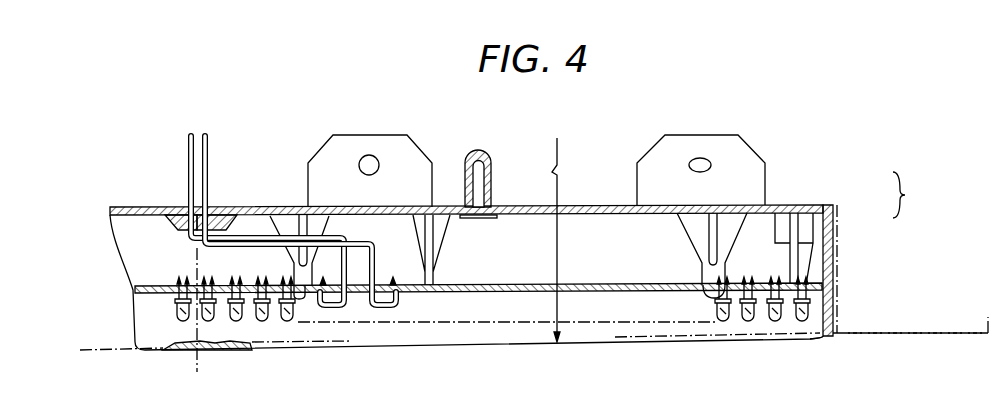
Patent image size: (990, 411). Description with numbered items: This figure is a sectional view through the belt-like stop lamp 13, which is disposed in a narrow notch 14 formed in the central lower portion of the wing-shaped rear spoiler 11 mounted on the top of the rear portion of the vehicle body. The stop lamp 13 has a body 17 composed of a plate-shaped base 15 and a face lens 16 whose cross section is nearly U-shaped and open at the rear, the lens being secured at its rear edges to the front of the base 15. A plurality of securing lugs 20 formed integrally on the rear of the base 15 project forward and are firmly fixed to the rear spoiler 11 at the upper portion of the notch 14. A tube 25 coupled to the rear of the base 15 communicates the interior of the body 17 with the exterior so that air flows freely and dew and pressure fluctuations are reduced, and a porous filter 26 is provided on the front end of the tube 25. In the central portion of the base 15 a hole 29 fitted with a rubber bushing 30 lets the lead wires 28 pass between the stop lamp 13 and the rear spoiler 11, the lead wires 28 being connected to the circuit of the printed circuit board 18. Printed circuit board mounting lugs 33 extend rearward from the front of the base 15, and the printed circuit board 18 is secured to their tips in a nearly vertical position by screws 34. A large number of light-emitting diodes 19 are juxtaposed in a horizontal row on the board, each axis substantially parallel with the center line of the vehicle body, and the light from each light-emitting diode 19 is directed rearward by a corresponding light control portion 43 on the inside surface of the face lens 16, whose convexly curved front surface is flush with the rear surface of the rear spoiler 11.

The rear spoiler 11 is at (933, 338).
The stop lamp 13 is at (512, 383).
The notch 14 is at (825, 338).
The base 15 is at (830, 199).
The face lens 16 is at (838, 217).
The body 17 is at (913, 195).
The printed circuit board 18 is at (165, 294).
The light-emitting diodes 19 is at (287, 323).
The securing lugs 20 is at (370, 135).
The tube 25 is at (492, 168).
The filter 26 is at (477, 218).
The lead wires 28 is at (207, 158).
The hole 29 is at (175, 212).
The rubber bushing 30 is at (218, 212).
The printed circuit board mounting lugs 33 is at (297, 267).
The screws 34 is at (302, 297).
The light control portions 43 is at (175, 340).